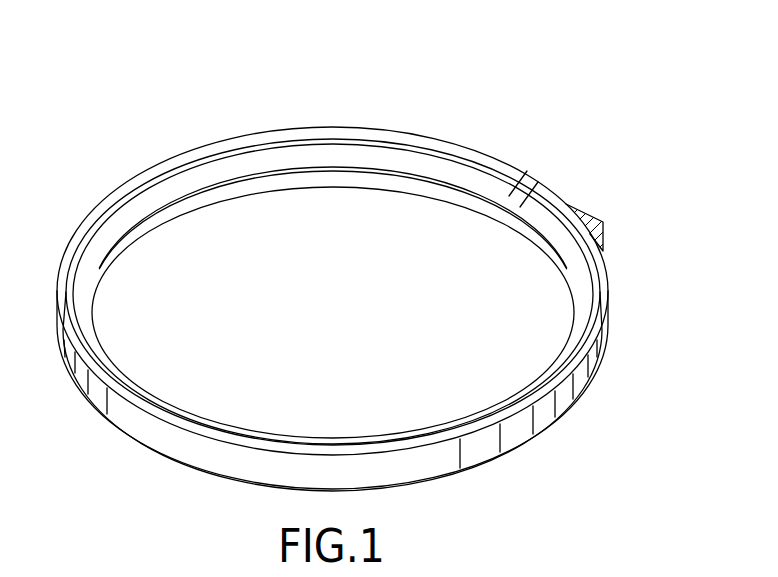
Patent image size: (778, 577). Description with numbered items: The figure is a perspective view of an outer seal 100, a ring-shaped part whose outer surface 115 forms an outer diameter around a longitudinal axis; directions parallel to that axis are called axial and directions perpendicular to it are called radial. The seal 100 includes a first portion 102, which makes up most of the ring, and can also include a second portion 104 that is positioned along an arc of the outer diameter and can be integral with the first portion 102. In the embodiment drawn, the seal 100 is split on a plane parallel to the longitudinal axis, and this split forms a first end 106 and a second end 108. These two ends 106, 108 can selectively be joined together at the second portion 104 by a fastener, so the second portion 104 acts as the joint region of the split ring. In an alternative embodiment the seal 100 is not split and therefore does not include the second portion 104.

The outer seal 100 is at (551, 97).
The first portion 102 is at (583, 371).
The second portion 104 is at (598, 218).
The first end 106 is at (495, 204).
The second end 108 is at (535, 213).
The outer surface 115 is at (488, 444).